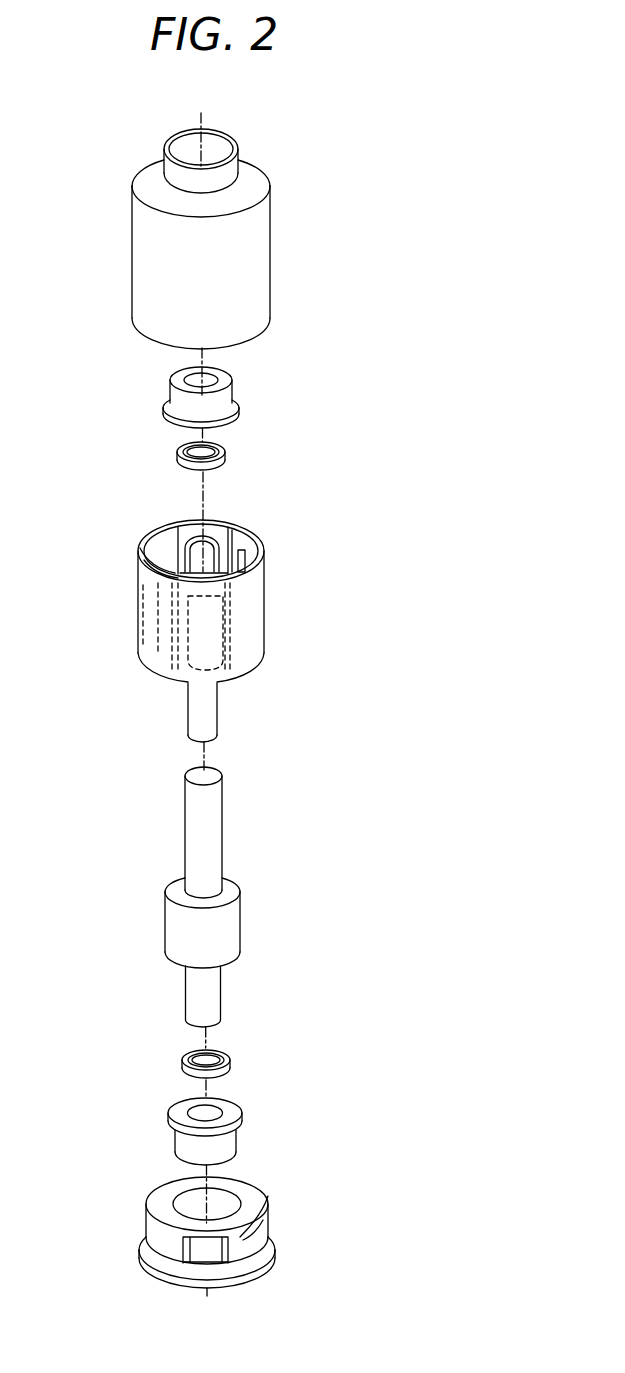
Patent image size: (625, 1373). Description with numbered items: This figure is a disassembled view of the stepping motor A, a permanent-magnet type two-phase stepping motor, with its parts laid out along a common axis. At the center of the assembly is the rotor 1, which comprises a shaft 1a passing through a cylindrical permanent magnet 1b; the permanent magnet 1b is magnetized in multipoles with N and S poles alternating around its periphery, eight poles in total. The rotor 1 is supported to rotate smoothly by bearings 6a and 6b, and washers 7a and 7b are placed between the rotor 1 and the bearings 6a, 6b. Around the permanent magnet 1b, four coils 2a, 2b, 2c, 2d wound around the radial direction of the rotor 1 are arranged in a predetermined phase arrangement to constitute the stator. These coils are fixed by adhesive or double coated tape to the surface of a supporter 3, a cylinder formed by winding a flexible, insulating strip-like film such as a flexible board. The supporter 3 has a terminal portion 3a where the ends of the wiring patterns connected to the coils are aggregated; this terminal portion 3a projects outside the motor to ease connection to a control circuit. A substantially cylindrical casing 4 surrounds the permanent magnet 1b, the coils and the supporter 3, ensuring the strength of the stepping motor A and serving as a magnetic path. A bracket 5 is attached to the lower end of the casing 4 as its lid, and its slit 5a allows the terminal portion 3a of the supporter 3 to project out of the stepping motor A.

The rotor 1 is at (278, 847).
The shaft 1a is at (213, 803).
The permanent magnet 1b is at (230, 923).
The coil 2a is at (143, 543).
The coil 2b is at (178, 568).
The coil 2c is at (253, 537).
The coil 2d is at (210, 527).
The supporter 3 is at (223, 605).
The terminal portion 3a is at (205, 723).
The casing 4 is at (249, 267).
The bracket 5 is at (231, 1232).
The slit 5a is at (210, 1250).
The bearing 6a is at (235, 393).
The bearing 6b is at (237, 1147).
The washer 7a is at (225, 447).
The washer 7b is at (225, 1055).
The stepping motor A is at (118, 715).